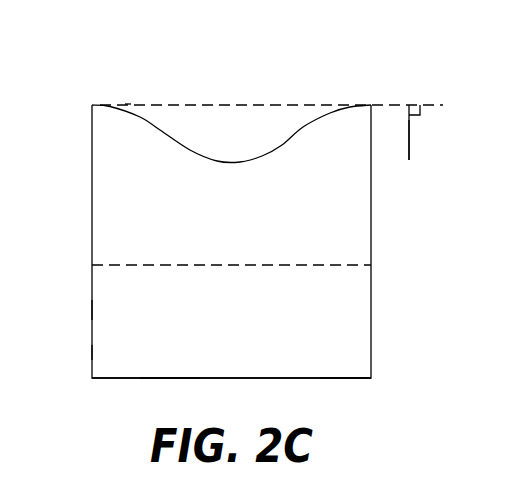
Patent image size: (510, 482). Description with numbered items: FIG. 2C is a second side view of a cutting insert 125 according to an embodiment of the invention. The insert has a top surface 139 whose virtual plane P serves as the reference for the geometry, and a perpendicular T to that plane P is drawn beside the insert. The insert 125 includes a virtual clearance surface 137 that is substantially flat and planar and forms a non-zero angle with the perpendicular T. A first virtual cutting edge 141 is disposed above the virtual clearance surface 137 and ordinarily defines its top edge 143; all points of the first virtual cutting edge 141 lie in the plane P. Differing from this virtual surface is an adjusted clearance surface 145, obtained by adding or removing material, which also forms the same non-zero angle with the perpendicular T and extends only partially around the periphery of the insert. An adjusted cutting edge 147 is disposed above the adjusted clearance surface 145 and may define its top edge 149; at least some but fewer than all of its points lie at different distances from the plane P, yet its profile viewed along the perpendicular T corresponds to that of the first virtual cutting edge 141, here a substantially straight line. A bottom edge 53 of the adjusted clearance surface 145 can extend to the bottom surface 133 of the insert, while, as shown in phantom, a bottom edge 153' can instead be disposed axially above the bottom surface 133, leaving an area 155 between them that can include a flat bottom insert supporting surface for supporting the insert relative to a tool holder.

The insert 125 is at (376, 238).
The bottom surface 133 is at (168, 379).
The virtual clearance surface 137 is at (294, 287).
The top surface 139 is at (175, 127).
The first virtual cutting edge 141 is at (150, 104).
The top edge 143 is at (128, 104).
The adjusted clearance surface 145 is at (306, 327).
The adjusted cutting edge 147 is at (283, 147).
The top edge 149 is at (308, 122).
The bottom edge 153' is at (85, 293).
The area 155 is at (130, 350).
The bottom edge 53 is at (340, 380).
The virtual plane P is at (416, 102).
The perpendicular T is at (413, 135).